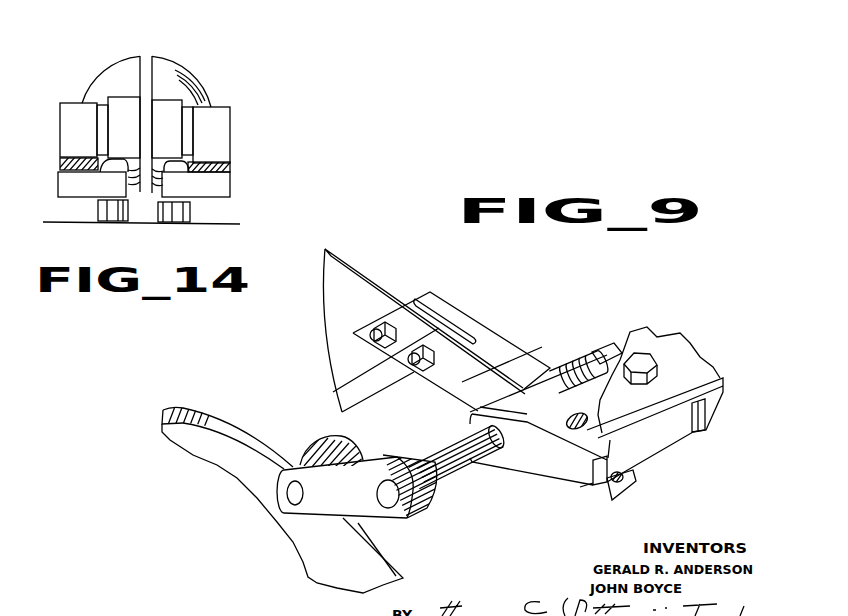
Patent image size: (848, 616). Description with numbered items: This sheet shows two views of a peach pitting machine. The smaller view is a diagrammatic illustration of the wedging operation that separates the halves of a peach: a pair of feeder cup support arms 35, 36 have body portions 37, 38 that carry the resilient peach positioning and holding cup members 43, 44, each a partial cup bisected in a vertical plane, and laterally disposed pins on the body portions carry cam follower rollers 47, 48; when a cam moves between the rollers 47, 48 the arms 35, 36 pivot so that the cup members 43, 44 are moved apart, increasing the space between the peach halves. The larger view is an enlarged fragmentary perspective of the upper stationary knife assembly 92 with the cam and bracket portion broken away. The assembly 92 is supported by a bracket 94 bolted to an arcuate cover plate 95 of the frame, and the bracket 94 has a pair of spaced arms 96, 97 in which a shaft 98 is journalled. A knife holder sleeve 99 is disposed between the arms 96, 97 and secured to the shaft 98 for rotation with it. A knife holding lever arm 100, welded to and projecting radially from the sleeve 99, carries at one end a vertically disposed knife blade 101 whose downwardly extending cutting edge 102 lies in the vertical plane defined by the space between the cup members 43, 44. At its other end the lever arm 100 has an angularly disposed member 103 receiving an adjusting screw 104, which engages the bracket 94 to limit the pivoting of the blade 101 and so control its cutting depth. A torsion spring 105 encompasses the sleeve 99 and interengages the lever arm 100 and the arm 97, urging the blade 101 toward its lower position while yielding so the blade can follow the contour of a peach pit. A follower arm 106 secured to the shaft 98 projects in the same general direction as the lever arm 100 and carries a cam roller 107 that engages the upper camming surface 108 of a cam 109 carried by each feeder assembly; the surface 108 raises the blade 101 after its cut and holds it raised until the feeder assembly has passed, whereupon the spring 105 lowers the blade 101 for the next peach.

In FIG. 14, the feeder cup support arm 35 is at (224, 131).
In FIG. 14, the feeder cup support arm 36 is at (57, 122).
In FIG. 14, the body portion 37 is at (230, 167).
In FIG. 14, the body portion 38 is at (62, 165).
In FIG. 14, the peach positioning and holding cup member 43 is at (175, 83).
In FIG. 14, the peach positioning and holding cup member 44 is at (120, 70).
In FIG. 14, the cam follower roller 47 is at (172, 213).
In FIG. 14, the cam follower roller 48 is at (105, 212).
In FIG. 9, the upper stationary knife assembly 92 is at (501, 323).
In FIG. 9, the bracket 94 is at (647, 443).
In FIG. 9, the arcuate cover plate 95 is at (683, 367).
In FIG. 9, the arm 96 is at (537, 450).
In FIG. 9, the arm 97 is at (603, 358).
In FIG. 9, the shaft 98 is at (453, 457).
In FIG. 9, the knife holder sleeve 99 is at (540, 393).
In FIG. 9, the knife holding lever arm 100 is at (457, 316).
In FIG. 9, the knife blade 101 is at (345, 357).
In FIG. 9, the cutting edge 102 is at (365, 383).
In FIG. 9, the angularly disposed member 103 is at (592, 488).
In FIG. 9, the adjusting screw 104 is at (616, 476).
In FIG. 9, the torsion spring 105 is at (582, 365).
In FIG. 9, the follower arm 106 is at (354, 504).
In FIG. 9, the cam roller 107 is at (332, 450).
In FIG. 9, the upper camming surface 108 is at (235, 432).
In FIG. 9, the cam 109 is at (335, 552).